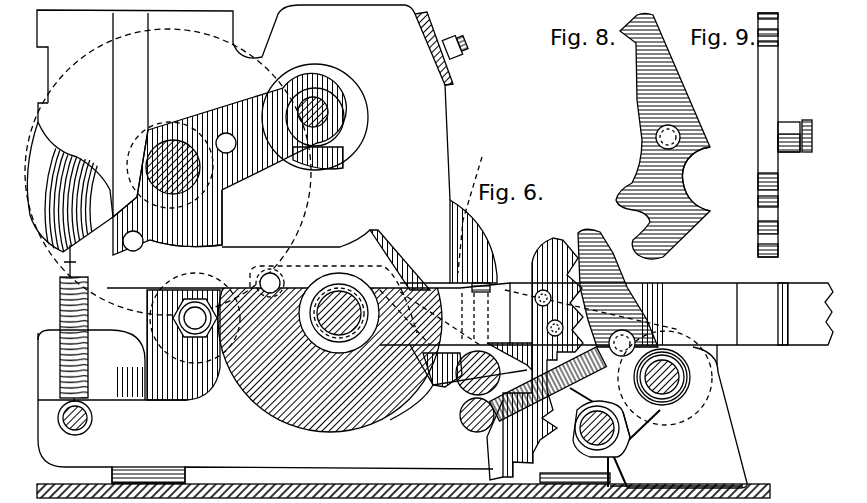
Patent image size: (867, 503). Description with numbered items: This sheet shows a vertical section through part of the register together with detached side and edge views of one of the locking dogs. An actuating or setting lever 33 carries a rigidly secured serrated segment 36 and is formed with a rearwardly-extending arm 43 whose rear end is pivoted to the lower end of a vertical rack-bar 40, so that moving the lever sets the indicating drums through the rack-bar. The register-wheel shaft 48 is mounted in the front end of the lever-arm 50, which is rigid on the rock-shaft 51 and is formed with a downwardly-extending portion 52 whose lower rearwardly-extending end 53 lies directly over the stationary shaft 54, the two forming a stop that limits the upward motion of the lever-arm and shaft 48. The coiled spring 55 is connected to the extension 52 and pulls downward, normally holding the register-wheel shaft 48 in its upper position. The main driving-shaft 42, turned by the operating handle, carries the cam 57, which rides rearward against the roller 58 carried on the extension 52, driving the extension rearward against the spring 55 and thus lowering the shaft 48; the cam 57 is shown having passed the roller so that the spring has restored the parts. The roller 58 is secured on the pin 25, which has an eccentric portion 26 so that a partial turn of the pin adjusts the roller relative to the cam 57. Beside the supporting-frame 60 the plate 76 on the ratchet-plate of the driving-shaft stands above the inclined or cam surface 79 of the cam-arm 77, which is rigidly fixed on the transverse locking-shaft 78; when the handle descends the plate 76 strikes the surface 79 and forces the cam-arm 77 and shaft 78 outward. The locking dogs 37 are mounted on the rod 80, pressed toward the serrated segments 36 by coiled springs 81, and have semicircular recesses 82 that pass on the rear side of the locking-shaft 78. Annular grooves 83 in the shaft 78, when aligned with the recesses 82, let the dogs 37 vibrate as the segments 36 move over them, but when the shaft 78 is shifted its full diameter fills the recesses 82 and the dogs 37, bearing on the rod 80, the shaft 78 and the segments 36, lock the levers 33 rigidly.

In FIG. 6, the rack-bars 40 is at (147, 52).
In FIG. 6, the rock-shaft 51 is at (180, 140).
In FIG. 6, the lever-arm 50 is at (229, 164).
In FIG. 6, the downwardly-extending portion 52 is at (208, 218).
In FIG. 6, the rearwardly-extending arms 43 is at (233, 257).
In FIG. 6, the main driving-shaft 42 is at (338, 290).
In FIG. 6, the supporting-frame 60 is at (315, 99).
In FIG. 6, the registering-wheel shaft 48 is at (325, 100).
In FIG. 6, the plate 76 is at (476, 210).
In FIG. 6, the inclined or cam surface 79 is at (487, 273).
In FIG. 6, the serrated segments 36 is at (548, 255).
In FIG. 6, the dogs 37 is at (589, 230).
In FIG. 8, the dogs 37 is at (661, 137).
In FIG. 9, the dogs 37 is at (785, 135).
In FIG. 6, the actuating or setting levers 33 is at (717, 290).
In FIG. 6, the coiled spring 55 is at (88, 346).
In FIG. 6, the pin 25 is at (188, 324).
In FIG. 6, the eccentric portion 26 is at (202, 332).
In FIG. 6, the roller 58 is at (214, 368).
In FIG. 6, the lower rearwardly-extending end 53 is at (105, 398).
In FIG. 6, the stationary shaft 54 is at (74, 431).
In FIG. 6, the cam 57 is at (300, 412).
In FIG. 6, the coiled springs 81 is at (490, 430).
In FIG. 6, the rod 80 is at (582, 442).
In FIG. 6, the semicircular recesses 82 is at (636, 432).
In FIG. 8, the semicircular recesses 82 is at (696, 179).
In FIG. 6, the locking-shaft 78 is at (686, 367).
In FIG. 6, the annular grooves 83 is at (690, 393).
In FIG. 6, the cam-arm 77 is at (688, 425).